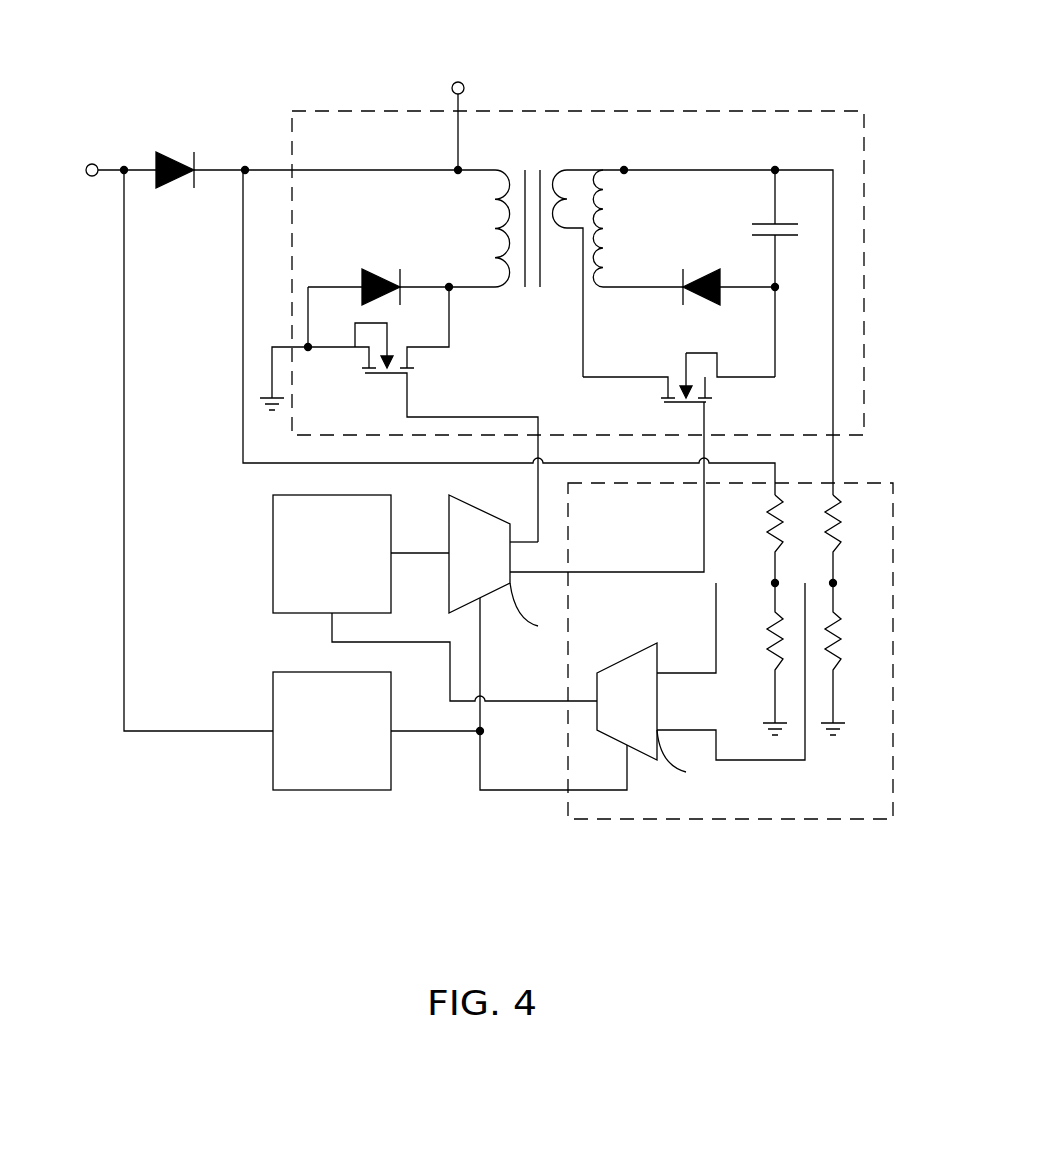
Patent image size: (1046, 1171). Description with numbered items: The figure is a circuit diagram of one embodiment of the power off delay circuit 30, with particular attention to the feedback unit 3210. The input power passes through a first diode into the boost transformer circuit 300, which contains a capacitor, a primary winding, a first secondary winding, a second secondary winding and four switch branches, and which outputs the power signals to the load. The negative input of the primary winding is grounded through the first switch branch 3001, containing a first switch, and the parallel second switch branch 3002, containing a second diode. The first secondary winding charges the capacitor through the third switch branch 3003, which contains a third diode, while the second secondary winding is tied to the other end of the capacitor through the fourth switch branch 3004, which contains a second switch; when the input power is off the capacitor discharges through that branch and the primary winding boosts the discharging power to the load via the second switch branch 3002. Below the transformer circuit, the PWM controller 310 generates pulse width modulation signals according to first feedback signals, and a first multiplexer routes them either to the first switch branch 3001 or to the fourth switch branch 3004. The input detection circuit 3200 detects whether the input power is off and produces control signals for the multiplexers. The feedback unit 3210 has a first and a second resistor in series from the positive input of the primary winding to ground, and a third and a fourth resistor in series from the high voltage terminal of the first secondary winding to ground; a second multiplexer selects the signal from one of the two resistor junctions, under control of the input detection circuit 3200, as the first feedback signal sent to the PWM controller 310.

The power off delay circuit 30 is at (549, 34).
The boost transformer circuit 300 is at (625, 111).
The first switch branch 3001 is at (480, 341).
The second switch branch 3002 is at (325, 259).
The third switch branch 3003 is at (724, 238).
The fourth switch branch 3004 is at (750, 381).
The PWM controller 310 is at (273, 590).
The input detection circuit 3200 is at (391, 760).
The feedback unit 3210 is at (828, 820).